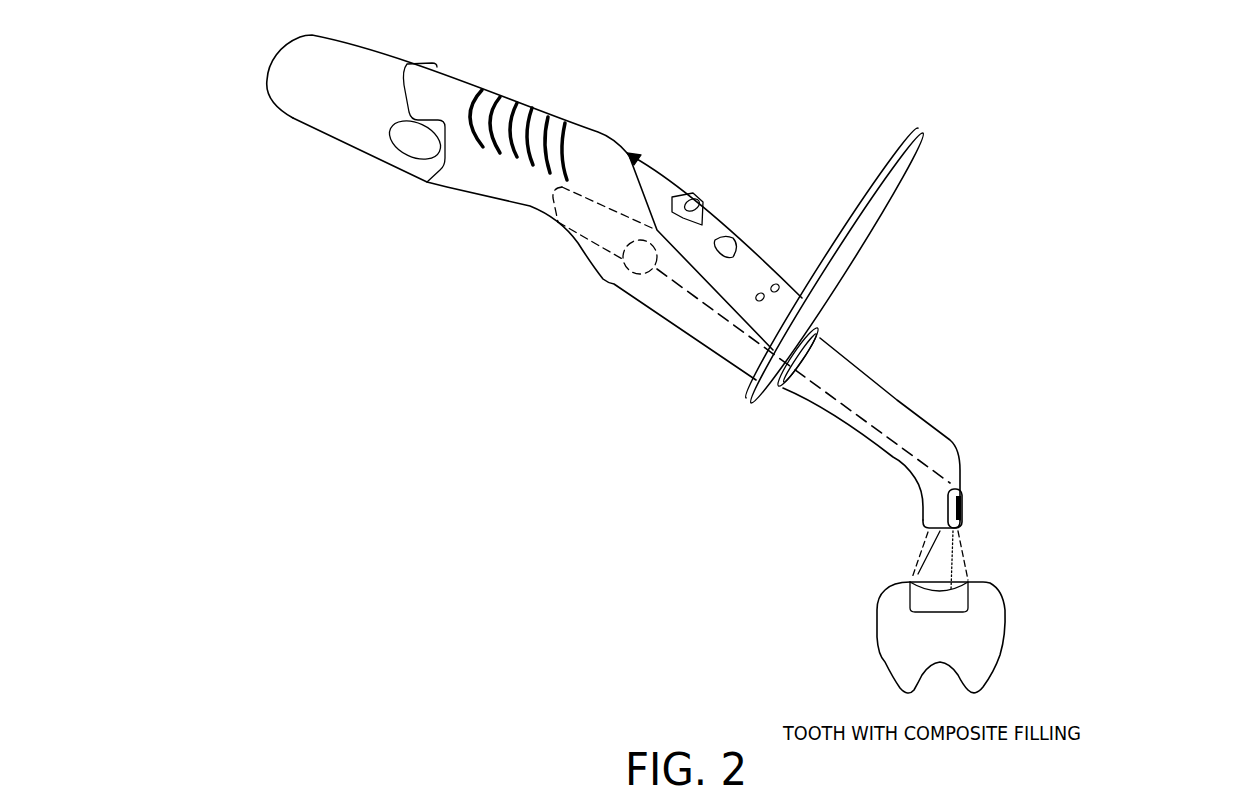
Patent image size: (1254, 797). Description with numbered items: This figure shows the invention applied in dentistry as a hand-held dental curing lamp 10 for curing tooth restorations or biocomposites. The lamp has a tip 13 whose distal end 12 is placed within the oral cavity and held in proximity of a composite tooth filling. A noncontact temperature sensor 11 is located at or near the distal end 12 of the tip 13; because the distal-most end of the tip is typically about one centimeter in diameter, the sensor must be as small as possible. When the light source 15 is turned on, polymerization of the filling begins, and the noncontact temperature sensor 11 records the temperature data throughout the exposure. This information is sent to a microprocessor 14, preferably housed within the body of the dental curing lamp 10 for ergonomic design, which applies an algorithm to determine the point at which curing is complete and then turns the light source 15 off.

The dental curing lamp 10 is at (549, 329).
The noncontact temperature sensor 11 is at (960, 490).
The distal end 12 is at (916, 573).
The tip 13 is at (880, 447).
The microprocessor 14 is at (601, 200).
The light source 15 is at (981, 549).